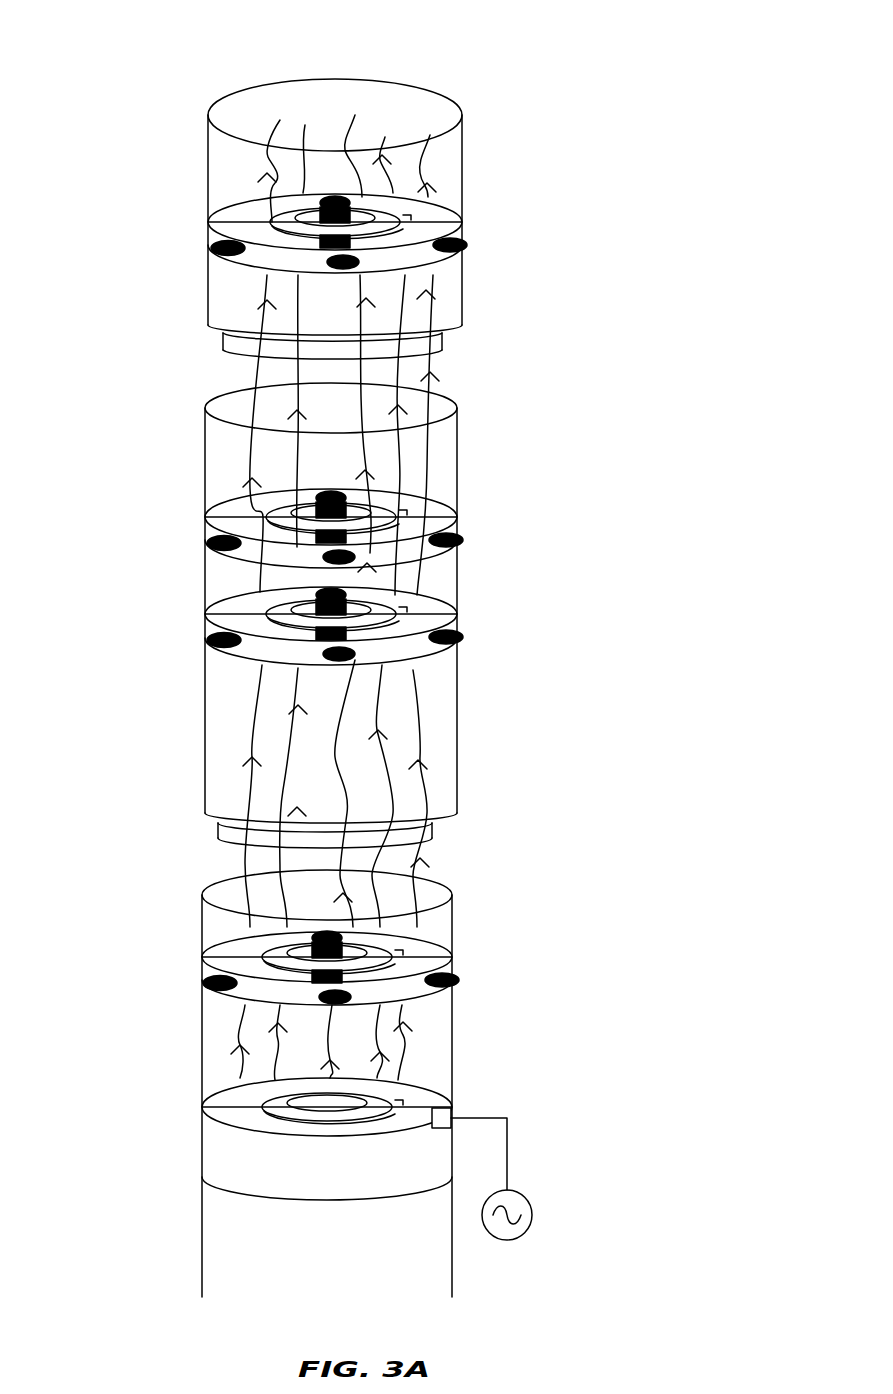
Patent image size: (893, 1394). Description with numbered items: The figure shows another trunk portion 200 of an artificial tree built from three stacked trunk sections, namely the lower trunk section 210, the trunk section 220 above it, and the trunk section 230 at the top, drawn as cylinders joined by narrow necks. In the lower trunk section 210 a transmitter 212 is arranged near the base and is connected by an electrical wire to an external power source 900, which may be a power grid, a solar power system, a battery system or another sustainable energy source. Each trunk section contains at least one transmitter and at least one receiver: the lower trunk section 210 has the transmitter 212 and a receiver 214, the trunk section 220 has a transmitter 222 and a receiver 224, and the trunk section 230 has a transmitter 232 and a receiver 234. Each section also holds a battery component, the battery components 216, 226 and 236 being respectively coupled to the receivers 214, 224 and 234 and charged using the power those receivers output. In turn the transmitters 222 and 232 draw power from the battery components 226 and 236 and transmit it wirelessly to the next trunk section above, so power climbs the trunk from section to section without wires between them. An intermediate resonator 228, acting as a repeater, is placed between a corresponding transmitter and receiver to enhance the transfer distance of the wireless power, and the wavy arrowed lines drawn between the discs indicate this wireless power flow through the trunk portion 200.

The trunk portion 200 is at (738, 28).
The lower trunk section 210 is at (158, 890).
The transmitter 212 is at (418, 1168).
The receiver 214 is at (412, 988).
The battery component 216 is at (413, 1103).
The trunk section 220 is at (160, 423).
The transmitter 222 is at (372, 507).
The receiver 224 is at (415, 542).
The battery component 226 is at (394, 615).
The intermediate resonator 228 is at (416, 651).
The trunk section 230 is at (162, 332).
The transmitter 232 is at (445, 98).
The receiver 234 is at (462, 237).
The battery component 236 is at (410, 202).
The external power source 900 is at (532, 1208).